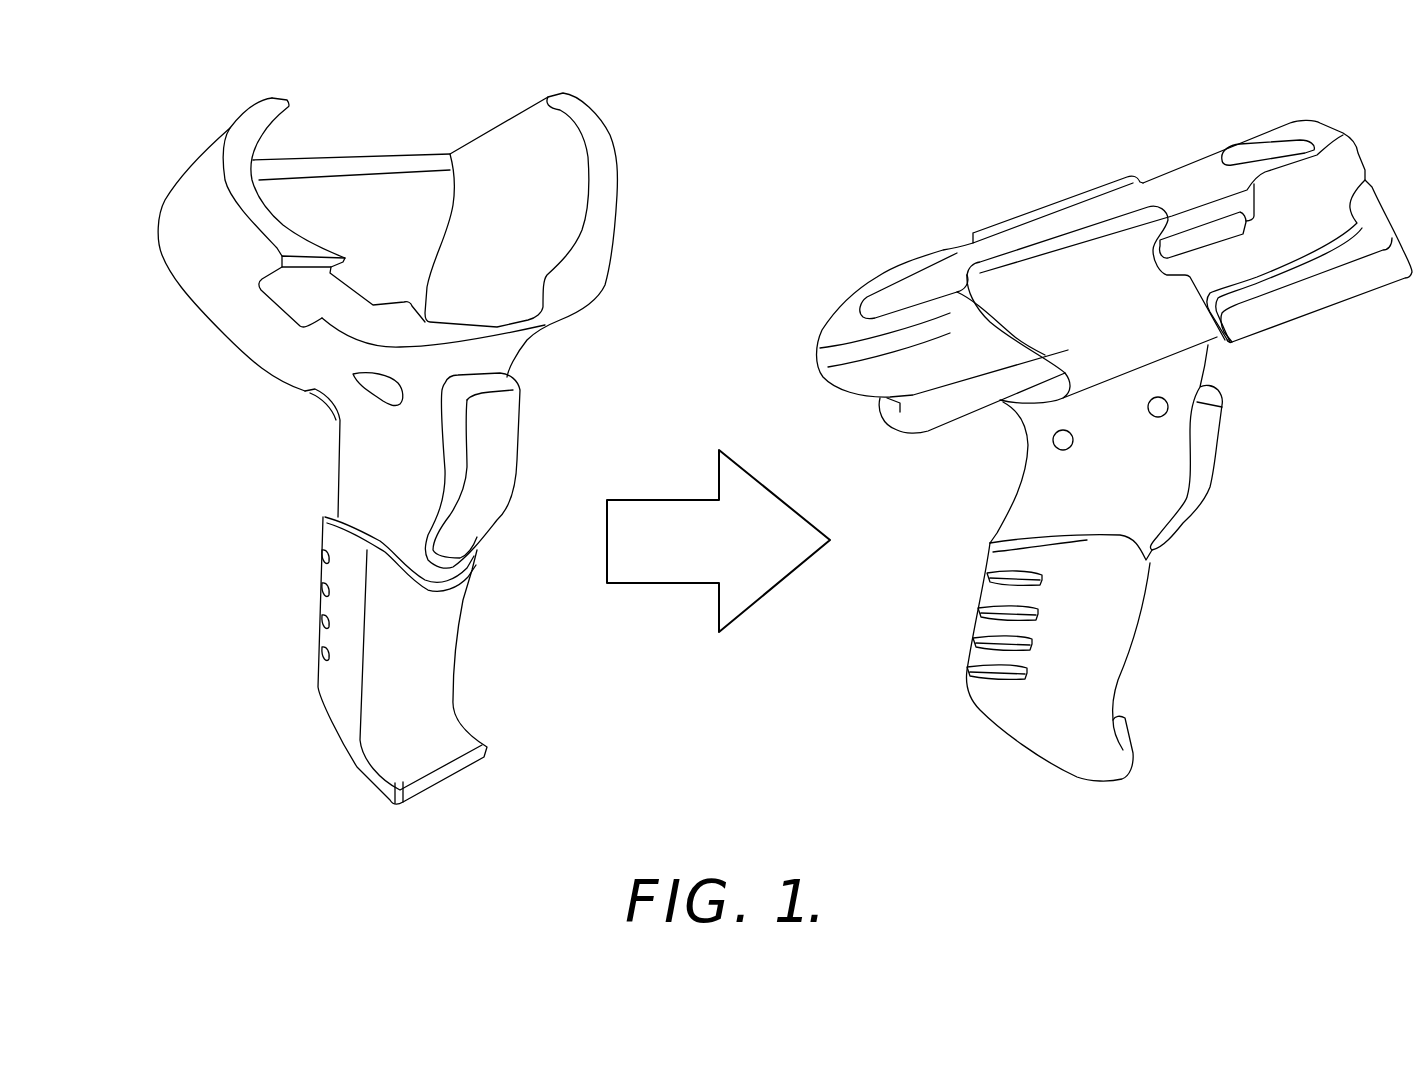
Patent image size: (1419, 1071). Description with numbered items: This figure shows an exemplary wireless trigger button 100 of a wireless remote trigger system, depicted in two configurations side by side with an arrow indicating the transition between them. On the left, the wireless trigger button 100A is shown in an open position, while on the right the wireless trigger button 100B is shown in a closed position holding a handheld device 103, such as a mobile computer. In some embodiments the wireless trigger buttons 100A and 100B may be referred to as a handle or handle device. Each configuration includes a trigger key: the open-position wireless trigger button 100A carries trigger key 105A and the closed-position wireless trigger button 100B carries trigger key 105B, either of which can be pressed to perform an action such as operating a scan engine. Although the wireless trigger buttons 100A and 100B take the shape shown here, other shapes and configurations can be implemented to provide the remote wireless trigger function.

The wireless trigger button 100 is at (1085, 92).
The wireless trigger button in open position 100A is at (330, 473).
The wireless trigger button in closed position 100B is at (997, 507).
The handheld device 103 is at (967, 247).
The trigger key 105A is at (560, 448).
The trigger key 105B is at (1210, 497).